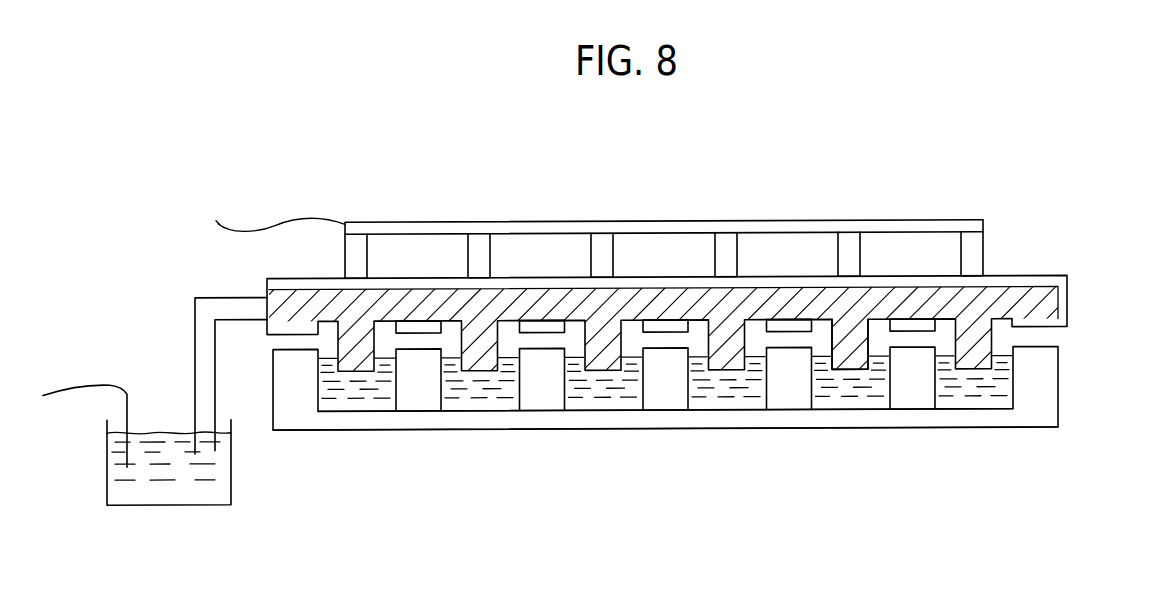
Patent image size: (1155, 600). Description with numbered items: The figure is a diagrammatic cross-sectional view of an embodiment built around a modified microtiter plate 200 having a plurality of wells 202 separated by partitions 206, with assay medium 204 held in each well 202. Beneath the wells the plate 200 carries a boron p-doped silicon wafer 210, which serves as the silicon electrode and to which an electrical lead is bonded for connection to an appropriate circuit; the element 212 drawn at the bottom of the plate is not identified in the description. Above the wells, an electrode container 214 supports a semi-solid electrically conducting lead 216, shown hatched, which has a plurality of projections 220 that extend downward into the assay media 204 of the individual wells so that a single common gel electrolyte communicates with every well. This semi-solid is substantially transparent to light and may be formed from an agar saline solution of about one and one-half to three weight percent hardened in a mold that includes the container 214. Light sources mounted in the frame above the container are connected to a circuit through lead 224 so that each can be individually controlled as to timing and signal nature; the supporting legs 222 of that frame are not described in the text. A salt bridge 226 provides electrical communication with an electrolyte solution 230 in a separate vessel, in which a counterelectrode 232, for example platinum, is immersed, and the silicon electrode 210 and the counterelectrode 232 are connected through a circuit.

The modified microtiter plate 200 is at (1068, 395).
The wells 202 is at (858, 395).
The assay medium 204 is at (487, 400).
The partitions 206 is at (552, 400).
The boron p-doped silicon wafer 210 is at (965, 417).
The tank bottom 212 is at (712, 428).
The electrode container 214 is at (1068, 300).
The semi-solid electrically conducting lead 216 is at (1018, 295).
The projections 220 is at (842, 327).
The spacer leg 222 is at (592, 246).
The lead 224 is at (261, 224).
The salt bridge 226 is at (196, 332).
The electrolyte solution 230 is at (217, 483).
The counterelectrode 232 is at (123, 403).